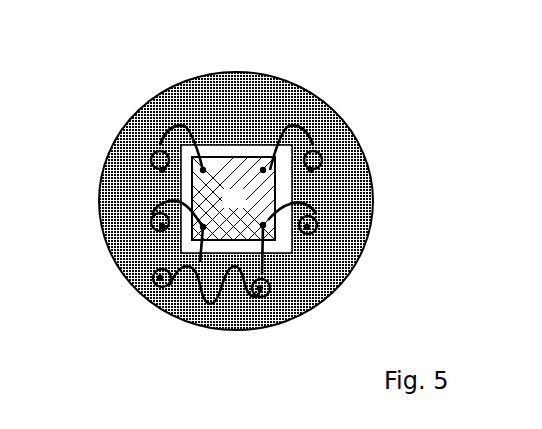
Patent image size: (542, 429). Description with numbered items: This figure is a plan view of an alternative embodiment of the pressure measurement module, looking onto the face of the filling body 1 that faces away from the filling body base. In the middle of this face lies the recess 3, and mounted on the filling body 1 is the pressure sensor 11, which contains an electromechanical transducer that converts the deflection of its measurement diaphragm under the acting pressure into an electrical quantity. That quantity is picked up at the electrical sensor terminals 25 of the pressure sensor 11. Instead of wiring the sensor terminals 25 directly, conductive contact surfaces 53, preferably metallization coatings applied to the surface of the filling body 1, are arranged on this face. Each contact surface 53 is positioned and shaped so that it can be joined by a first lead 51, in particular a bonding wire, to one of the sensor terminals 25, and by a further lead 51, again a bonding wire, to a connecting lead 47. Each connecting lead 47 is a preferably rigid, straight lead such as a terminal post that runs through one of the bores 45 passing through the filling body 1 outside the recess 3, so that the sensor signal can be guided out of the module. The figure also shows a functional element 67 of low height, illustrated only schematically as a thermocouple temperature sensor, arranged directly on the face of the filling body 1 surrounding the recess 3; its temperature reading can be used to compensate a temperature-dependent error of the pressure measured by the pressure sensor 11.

The filling body 1 is at (200, 107).
The recess 3 is at (255, 150).
The pressure sensor 11 is at (225, 207).
The sensor terminals 25 is at (215, 150).
The bores 45 is at (155, 170).
The connecting lead 47 is at (150, 160).
The lead 51 is at (265, 148).
The contact surfaces 53 is at (155, 125).
The functional element 67 is at (195, 322).